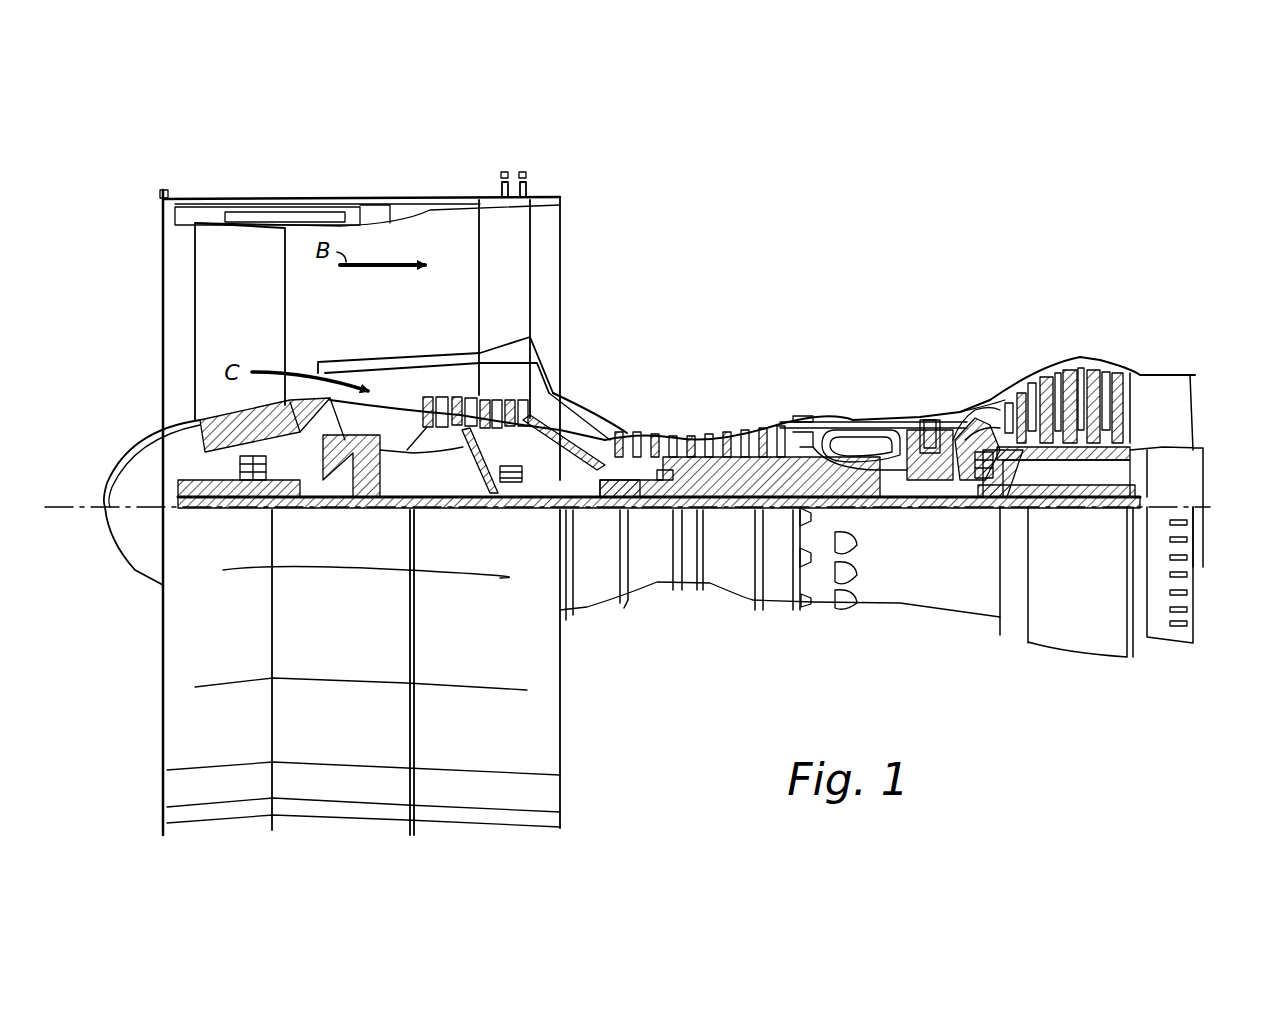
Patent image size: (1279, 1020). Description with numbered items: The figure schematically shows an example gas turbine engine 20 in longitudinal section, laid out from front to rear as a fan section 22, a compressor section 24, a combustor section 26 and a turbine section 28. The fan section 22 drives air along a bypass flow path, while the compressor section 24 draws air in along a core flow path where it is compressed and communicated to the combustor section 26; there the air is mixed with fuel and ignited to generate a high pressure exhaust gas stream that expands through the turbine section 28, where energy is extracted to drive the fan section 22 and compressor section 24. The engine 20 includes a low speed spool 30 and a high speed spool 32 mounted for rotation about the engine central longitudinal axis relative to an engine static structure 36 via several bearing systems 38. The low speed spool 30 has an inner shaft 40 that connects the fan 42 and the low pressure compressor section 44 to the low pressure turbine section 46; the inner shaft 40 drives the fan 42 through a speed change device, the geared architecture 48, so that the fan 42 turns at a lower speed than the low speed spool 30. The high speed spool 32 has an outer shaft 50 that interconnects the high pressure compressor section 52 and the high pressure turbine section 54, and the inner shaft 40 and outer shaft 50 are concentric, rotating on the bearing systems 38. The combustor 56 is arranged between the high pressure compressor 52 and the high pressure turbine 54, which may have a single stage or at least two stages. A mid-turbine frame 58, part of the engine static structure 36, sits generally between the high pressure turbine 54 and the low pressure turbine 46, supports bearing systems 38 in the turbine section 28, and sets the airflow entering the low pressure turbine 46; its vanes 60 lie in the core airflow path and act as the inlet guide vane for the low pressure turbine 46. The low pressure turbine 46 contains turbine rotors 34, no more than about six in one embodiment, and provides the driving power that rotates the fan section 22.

The gas turbine engine 20 is at (1032, 204).
The fan section 22 is at (388, 168).
The compressor section 24 is at (790, 305).
The combustor section 26 is at (905, 305).
The turbine section 28 is at (912, 305).
The low speed spool 30 is at (725, 516).
The high speed spool 32 is at (762, 478).
The turbine rotors 34 is at (1072, 460).
The engine static structure 36 is at (775, 614).
The bearing systems 38 is at (243, 483).
The inner shaft 40 is at (588, 520).
The fan 42 is at (252, 302).
The low pressure compressor section 44 is at (493, 390).
The low pressure turbine section 46 is at (1068, 395).
The geared architecture 48 is at (368, 495).
The outer shaft 50 is at (862, 490).
The high pressure compressor section 52 is at (674, 445).
The high pressure turbine section 54 is at (935, 422).
The combustor 56 is at (856, 440).
The mid-turbine frame 58 is at (976, 408).
The vanes 60 is at (993, 418).